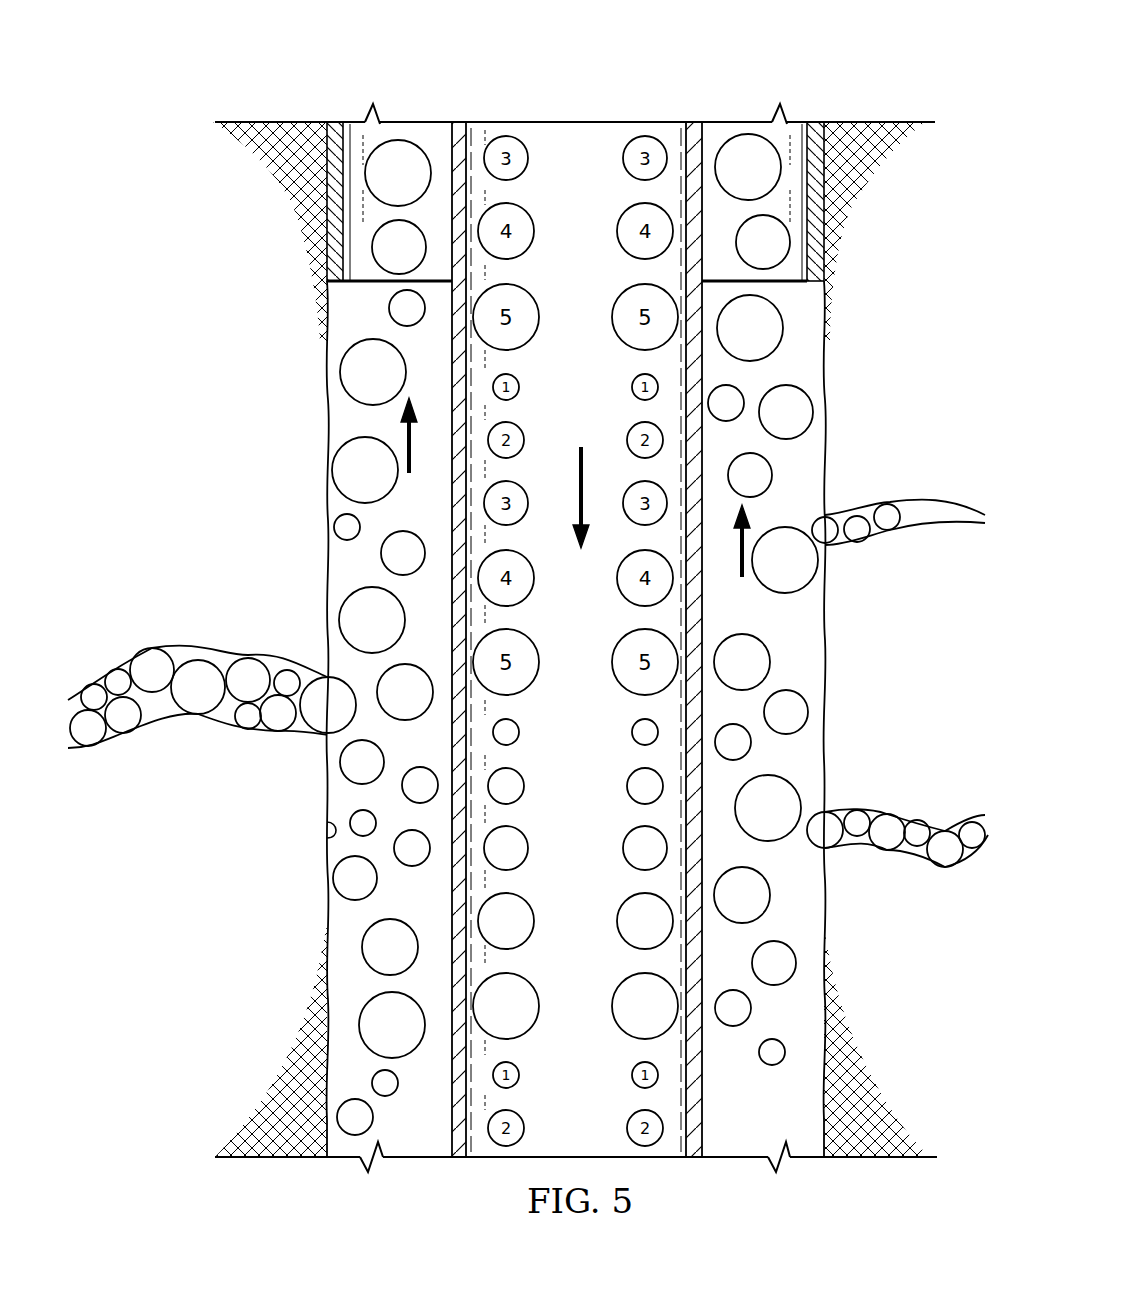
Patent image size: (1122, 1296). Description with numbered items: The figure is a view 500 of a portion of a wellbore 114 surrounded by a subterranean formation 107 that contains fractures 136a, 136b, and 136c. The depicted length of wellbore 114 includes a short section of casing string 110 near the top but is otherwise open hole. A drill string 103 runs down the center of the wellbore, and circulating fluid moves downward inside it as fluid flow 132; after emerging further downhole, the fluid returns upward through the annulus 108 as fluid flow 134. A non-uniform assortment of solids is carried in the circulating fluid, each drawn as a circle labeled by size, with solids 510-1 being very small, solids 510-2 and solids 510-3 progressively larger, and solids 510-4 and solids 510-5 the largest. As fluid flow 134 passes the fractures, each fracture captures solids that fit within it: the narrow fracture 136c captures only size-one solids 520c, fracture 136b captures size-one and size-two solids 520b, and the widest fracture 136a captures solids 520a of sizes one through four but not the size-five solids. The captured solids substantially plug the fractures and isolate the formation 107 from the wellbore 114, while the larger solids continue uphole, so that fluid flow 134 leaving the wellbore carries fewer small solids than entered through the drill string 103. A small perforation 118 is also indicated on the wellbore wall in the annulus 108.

The view 500 is at (345, 65).
The drill string 103 is at (698, 137).
The formation 107 is at (866, 243).
The casing string 110 is at (327, 249).
The annulus 108 is at (337, 416).
The perforation in wellbore wall 118 is at (327, 831).
The wellbore 114 is at (259, 478).
The fluid flow 134 is at (414, 448).
The fluid flow 132 is at (577, 468).
The fracture 136a is at (212, 691).
The fracture 136b is at (897, 831).
The fracture 136c is at (898, 524).
The solids 520a is at (246, 658).
The solids 520b is at (853, 810).
The solids 520c is at (893, 531).
The solids 510-1 is at (519, 727).
The solids 510-2 is at (524, 782).
The solids 510-3 is at (528, 847).
The solids 510-4 is at (533, 916).
The solids 510-5 is at (529, 1030).